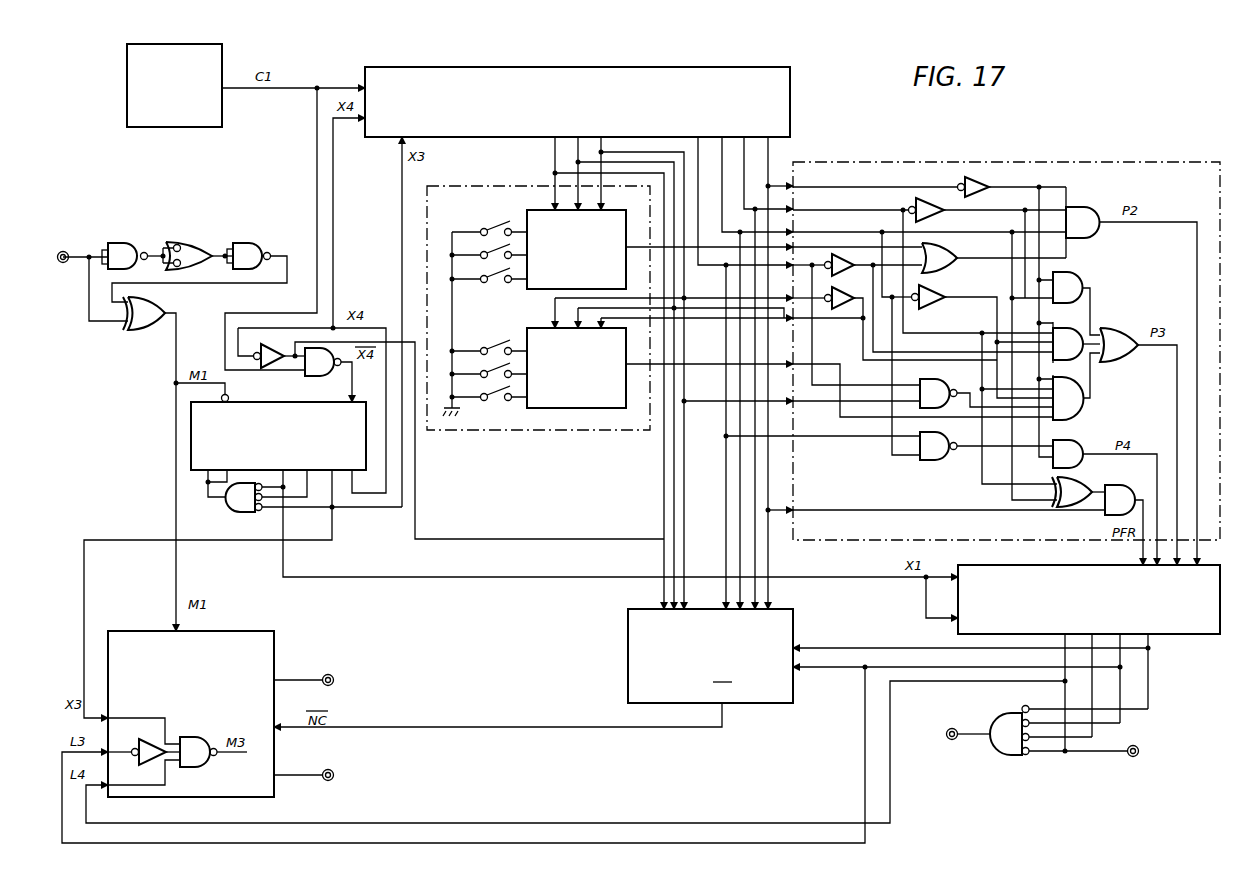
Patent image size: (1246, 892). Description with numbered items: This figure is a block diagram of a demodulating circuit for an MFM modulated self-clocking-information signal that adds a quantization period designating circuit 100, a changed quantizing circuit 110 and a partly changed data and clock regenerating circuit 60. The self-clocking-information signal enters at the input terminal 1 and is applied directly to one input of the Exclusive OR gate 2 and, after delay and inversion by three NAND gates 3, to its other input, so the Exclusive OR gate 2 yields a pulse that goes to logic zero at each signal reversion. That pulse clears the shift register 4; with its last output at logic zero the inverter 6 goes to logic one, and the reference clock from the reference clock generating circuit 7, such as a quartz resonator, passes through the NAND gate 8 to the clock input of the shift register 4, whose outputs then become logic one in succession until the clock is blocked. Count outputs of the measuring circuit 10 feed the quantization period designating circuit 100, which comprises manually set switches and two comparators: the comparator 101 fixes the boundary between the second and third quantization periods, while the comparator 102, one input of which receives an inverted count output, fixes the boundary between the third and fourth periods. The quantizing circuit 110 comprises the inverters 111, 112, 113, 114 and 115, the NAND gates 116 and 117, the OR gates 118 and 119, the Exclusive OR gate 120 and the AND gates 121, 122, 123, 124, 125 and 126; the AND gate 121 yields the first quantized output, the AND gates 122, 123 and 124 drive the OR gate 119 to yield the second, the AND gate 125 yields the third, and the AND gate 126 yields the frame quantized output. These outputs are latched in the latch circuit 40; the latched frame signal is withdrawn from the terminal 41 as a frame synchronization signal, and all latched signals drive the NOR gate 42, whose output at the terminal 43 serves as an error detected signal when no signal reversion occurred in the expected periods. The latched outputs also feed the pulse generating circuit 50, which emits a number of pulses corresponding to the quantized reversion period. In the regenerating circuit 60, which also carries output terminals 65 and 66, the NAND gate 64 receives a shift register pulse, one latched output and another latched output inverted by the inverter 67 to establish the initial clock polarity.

The input terminal 1 is at (62, 263).
The Exclusive OR gate 2 is at (148, 332).
The NAND gates 3 is at (124, 243).
The shift register 4 is at (262, 404).
The inverter 6 is at (280, 344).
The reference clock generating circuit 7 is at (204, 128).
The NAND gate 8 is at (318, 378).
The measuring circuit 10 is at (790, 92).
The latch circuit 40 is at (1025, 568).
The terminal 41 is at (1138, 746).
The NOR gate 42 is at (1012, 757).
The terminal 43 is at (952, 728).
The pulse generating circuit 50 is at (628, 665).
The circuit for regenerating the data and clock 60 is at (275, 648).
The NAND gate 64 is at (195, 737).
The output terminal RCR 65 is at (332, 770).
The output terminal RDA 66 is at (332, 675).
The inverter 67 is at (150, 760).
The quantization period designating circuit 100 is at (540, 432).
The comparator 101 is at (526, 212).
The comparator 102 is at (526, 330).
The quantizing circuit 110 is at (1078, 160).
The inverter 111 is at (846, 291).
The inverter 112 is at (846, 257).
The inverter 113 is at (930, 305).
The inverter 114 is at (930, 218).
The inverter 115 is at (978, 180).
The NAND gate 116 is at (938, 379).
The NAND gate 117 is at (934, 460).
The OR gate 118 is at (946, 270).
The OR gate 119 is at (1118, 328).
The Exclusive OR gate 120 is at (1068, 508).
The AND gate 121 is at (1080, 207).
The AND gate 122 is at (1070, 272).
The AND gate 123 is at (1064, 328).
The AND gate 124 is at (1084, 408).
The AND gate 125 is at (1074, 431).
The AND gate 126 is at (1122, 485).